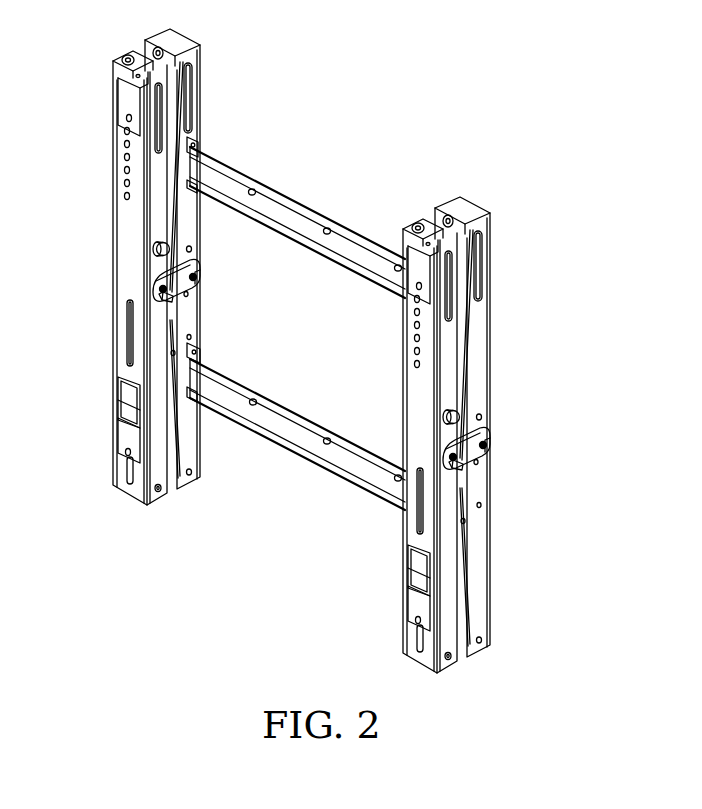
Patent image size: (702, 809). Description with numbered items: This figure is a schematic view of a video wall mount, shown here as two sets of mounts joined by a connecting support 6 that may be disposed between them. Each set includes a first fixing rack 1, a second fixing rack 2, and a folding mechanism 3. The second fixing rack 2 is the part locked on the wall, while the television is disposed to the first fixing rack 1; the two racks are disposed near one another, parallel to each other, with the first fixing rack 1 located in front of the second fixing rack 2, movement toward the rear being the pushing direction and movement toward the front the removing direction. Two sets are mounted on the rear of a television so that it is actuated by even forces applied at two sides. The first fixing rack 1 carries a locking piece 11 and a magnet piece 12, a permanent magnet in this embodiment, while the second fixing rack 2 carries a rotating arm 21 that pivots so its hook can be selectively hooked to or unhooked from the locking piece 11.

The first fixing rack 1 is at (120, 487).
The second fixing rack 2 is at (193, 455).
The folding mechanism 3 is at (173, 167).
The connecting support 6 is at (308, 230).
The locking piece 11 is at (166, 296).
The magnet piece 12 is at (155, 247).
The rotating arm 21 is at (200, 270).